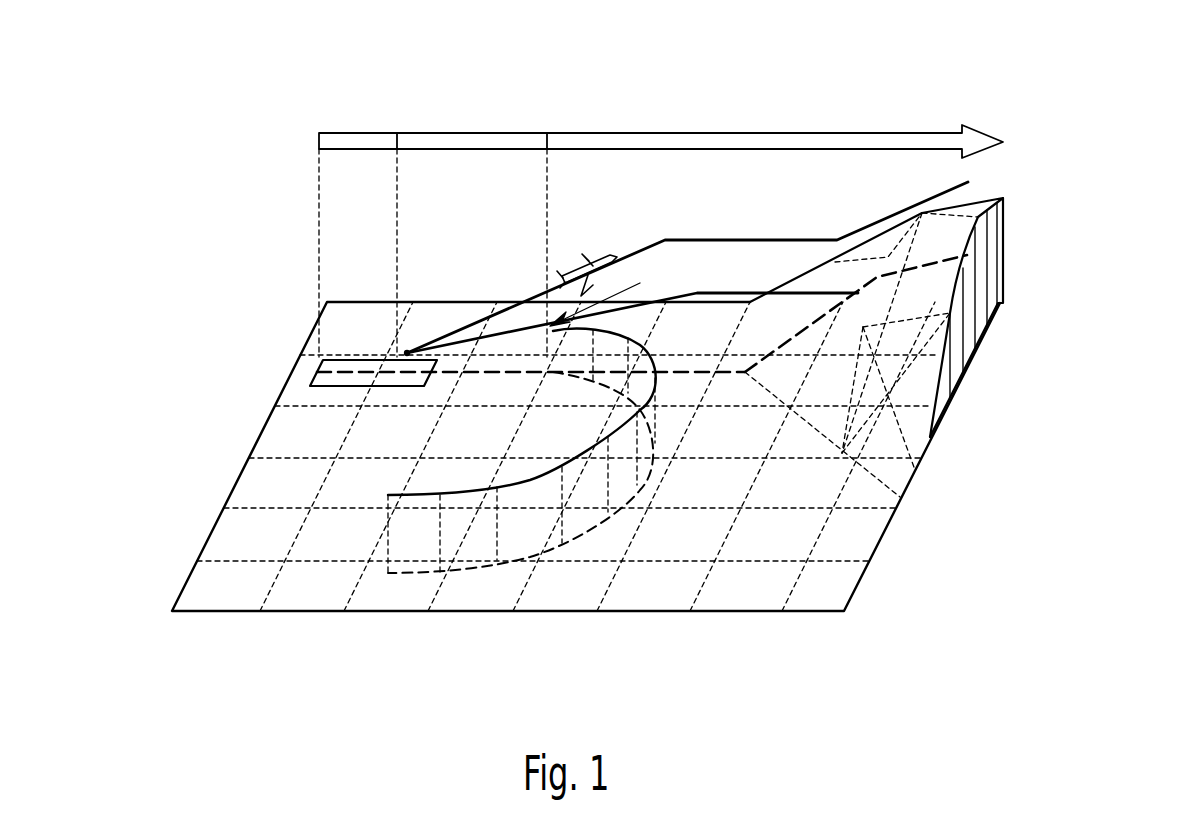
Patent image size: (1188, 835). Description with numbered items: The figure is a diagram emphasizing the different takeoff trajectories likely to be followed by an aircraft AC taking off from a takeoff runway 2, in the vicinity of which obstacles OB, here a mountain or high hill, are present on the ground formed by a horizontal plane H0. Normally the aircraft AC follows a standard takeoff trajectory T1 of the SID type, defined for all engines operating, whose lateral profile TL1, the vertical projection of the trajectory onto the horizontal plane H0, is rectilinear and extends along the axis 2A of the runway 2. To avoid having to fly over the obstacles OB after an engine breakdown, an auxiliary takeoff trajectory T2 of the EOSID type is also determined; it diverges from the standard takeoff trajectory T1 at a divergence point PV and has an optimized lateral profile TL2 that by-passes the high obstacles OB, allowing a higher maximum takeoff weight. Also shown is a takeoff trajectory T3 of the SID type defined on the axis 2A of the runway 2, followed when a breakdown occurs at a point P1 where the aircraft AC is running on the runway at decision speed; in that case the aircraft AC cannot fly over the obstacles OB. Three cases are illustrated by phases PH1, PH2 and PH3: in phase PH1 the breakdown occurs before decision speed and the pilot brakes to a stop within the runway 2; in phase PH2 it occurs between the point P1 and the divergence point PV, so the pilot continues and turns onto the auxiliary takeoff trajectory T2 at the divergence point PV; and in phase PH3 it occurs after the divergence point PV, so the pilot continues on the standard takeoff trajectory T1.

The horizontal plane H0 is at (220, 611).
The takeoff runway 2 is at (313, 384).
The axis of the runway 2A is at (322, 369).
The first phase PH1 is at (358, 133).
The second phase PH2 is at (468, 133).
The third phase PH3 is at (696, 133).
The standard takeoff trajectory T1 is at (718, 240).
The auxiliary takeoff trajectory T2 is at (583, 450).
The takeoff trajectory T3 is at (738, 293).
The lateral profile TL1 is at (930, 265).
The optimized lateral profile TL2 is at (485, 572).
The point P1 is at (408, 353).
The divergence point PV is at (611, 294).
The aircraft AC is at (597, 257).
The obstacles OB is at (1035, 208).